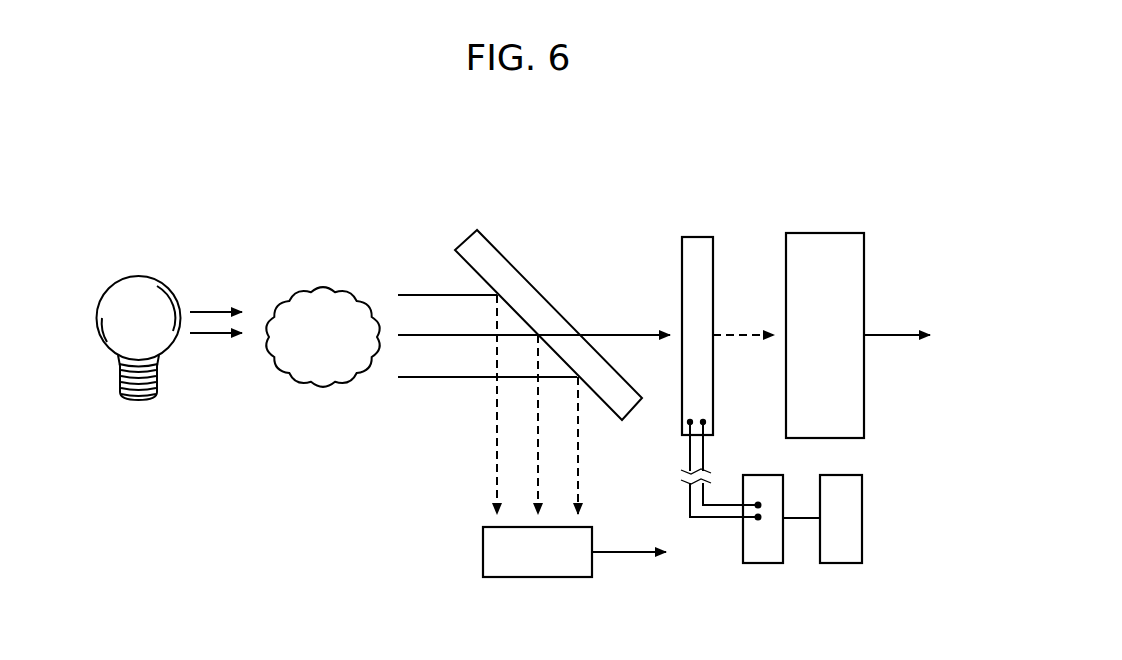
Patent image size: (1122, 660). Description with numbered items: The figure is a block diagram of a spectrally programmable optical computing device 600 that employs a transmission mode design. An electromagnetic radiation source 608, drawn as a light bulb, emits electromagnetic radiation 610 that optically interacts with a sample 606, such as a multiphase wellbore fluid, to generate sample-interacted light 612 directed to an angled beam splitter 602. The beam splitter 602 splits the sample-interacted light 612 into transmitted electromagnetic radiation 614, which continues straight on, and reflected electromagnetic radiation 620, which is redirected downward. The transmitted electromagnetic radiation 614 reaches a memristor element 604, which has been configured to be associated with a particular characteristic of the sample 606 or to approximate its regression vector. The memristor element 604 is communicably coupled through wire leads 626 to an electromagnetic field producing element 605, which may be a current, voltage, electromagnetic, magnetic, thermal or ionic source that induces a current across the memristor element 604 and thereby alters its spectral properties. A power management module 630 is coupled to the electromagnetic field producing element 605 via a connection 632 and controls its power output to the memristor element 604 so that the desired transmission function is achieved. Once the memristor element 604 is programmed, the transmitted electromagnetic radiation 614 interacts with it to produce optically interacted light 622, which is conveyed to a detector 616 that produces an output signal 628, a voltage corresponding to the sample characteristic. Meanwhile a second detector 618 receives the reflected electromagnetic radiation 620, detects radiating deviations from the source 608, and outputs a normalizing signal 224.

The spectrally programmable optical computing device 600 is at (279, 168).
The electromagnetic radiation source 608 is at (138, 277).
The electromagnetic radiation 610 is at (213, 310).
The sample 606 is at (345, 348).
The sample-interacted light 612 is at (423, 295).
The beam splitter 602 is at (463, 238).
The transmitted electromagnetic radiation 614 is at (637, 333).
The reflected electromagnetic radiation 620 is at (497, 417).
The memristor element 604 is at (697, 237).
The optically interacted light 622 is at (740, 333).
The detector 616 is at (848, 352).
The output signal 628 is at (883, 333).
The second detector 618 is at (560, 563).
The normalizing signal 224 is at (612, 556).
The wire leads 626 is at (685, 453).
The electromagnetic field producing element 605 is at (763, 565).
The connection 632 is at (800, 520).
The power management module 630 is at (862, 515).